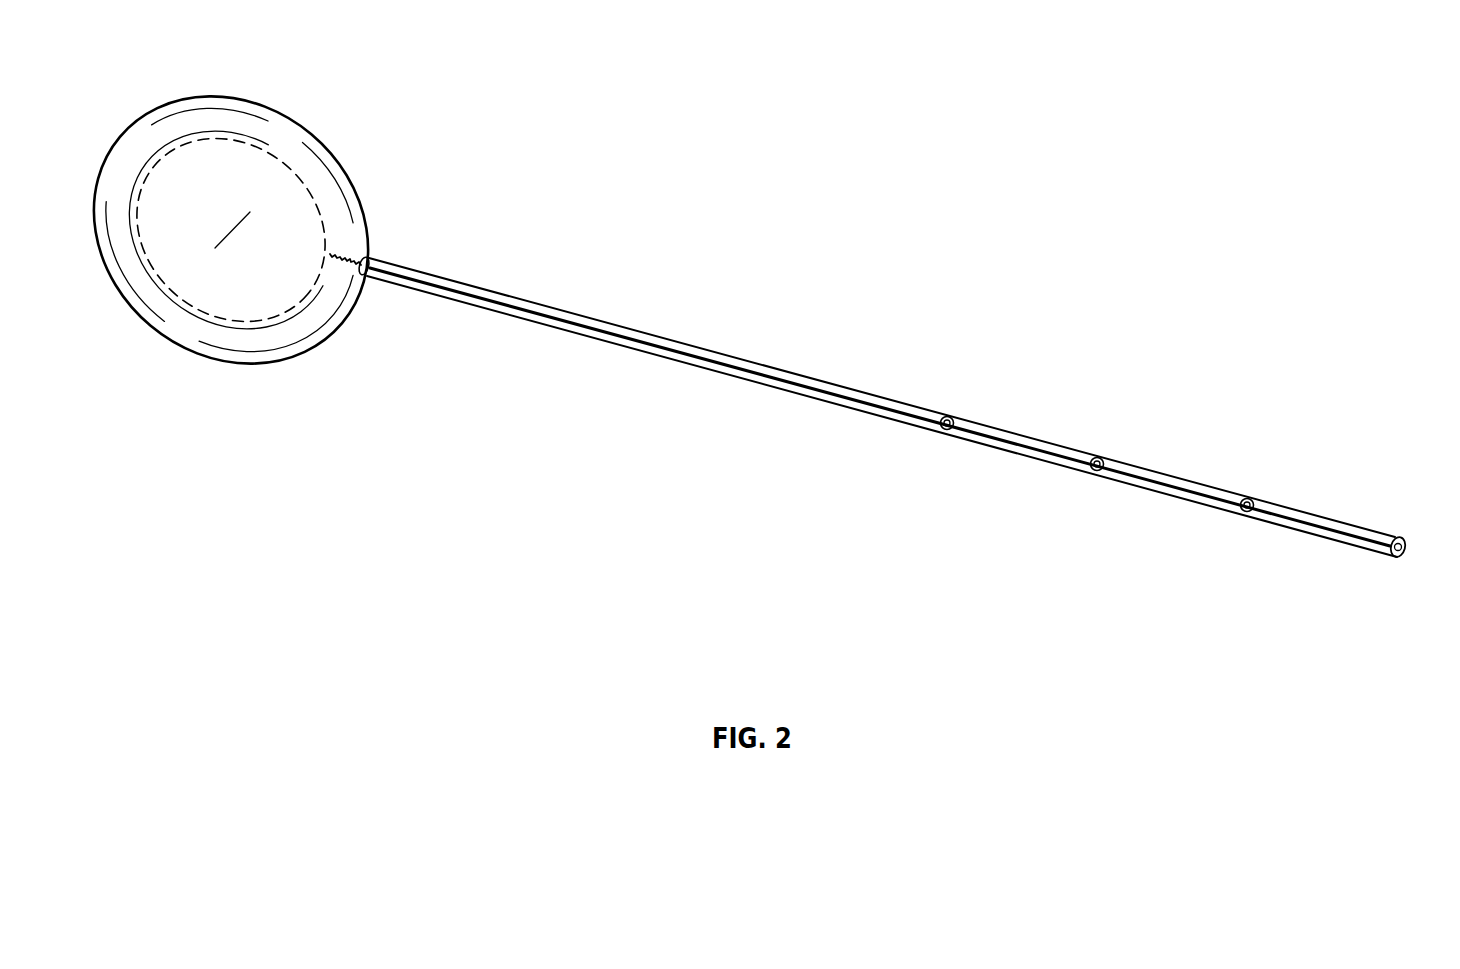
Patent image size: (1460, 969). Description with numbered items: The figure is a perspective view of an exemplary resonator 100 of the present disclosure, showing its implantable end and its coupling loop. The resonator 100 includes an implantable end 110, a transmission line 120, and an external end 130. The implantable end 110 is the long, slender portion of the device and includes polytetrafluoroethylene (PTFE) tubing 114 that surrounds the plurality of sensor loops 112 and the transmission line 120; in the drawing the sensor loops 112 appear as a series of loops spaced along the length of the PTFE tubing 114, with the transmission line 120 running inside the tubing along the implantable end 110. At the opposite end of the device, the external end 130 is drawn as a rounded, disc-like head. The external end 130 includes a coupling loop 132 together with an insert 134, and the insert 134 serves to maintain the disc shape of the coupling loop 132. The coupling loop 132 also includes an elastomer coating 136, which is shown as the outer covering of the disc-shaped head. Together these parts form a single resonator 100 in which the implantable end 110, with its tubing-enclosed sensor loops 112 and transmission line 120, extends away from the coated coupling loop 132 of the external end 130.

The resonator 100 is at (1262, 121).
The implantable end 110 is at (1354, 699).
The sensor loops 112 is at (953, 417).
The polytetrafluoroethylene (PTFE) tubing 114 is at (845, 384).
The transmission line 120 is at (780, 381).
The external end 130 is at (603, 496).
The coupling loop 132 is at (267, 148).
The insert 134 is at (298, 242).
The elastomer coating 136 is at (345, 174).